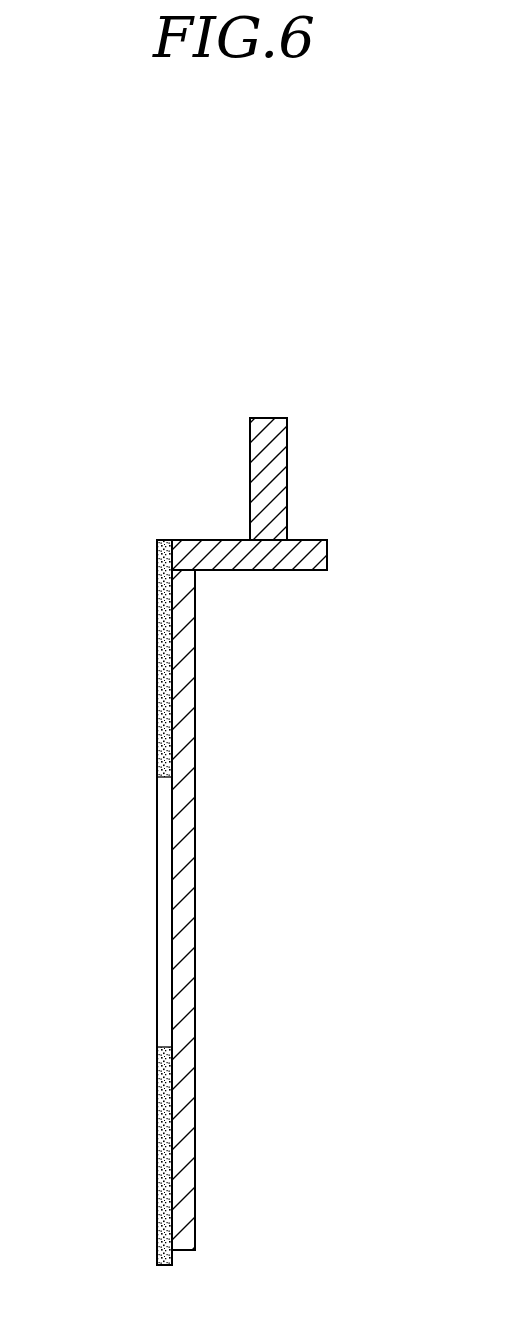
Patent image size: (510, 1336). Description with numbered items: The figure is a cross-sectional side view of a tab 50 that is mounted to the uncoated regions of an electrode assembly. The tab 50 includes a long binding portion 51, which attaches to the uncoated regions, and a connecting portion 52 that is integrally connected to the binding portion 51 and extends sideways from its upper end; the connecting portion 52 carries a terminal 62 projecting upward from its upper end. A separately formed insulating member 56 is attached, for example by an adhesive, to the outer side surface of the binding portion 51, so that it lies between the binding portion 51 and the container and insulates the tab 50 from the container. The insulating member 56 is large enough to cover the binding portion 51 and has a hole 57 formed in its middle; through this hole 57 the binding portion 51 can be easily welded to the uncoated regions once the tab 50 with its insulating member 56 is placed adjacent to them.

The tab 50 is at (152, 490).
The binding portion 51 is at (196, 938).
The connecting portion 52 is at (327, 558).
The insulating member 56 is at (158, 703).
The hole 57 is at (165, 887).
The terminal 62 is at (287, 442).